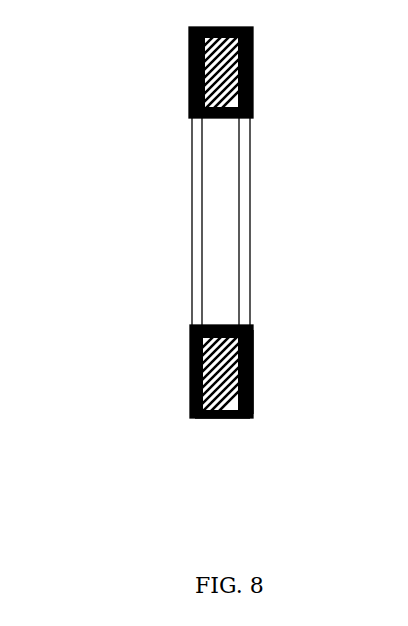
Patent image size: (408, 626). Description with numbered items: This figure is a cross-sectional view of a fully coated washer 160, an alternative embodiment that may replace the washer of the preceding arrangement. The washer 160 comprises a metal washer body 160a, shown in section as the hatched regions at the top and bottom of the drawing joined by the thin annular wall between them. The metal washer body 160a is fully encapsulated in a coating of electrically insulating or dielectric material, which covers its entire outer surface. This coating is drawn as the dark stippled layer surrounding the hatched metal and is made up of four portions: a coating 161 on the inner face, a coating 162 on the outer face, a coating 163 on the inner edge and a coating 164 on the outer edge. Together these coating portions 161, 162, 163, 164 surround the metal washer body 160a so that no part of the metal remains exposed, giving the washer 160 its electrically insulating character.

The washer 160 is at (176, 242).
The metal washer body 160a is at (220, 163).
The coating on the inner face 161 is at (190, 377).
The coating on the outer face 162 is at (253, 375).
The coating on the inner edge 163 is at (217, 328).
The coating on the outer edge 164 is at (233, 420).